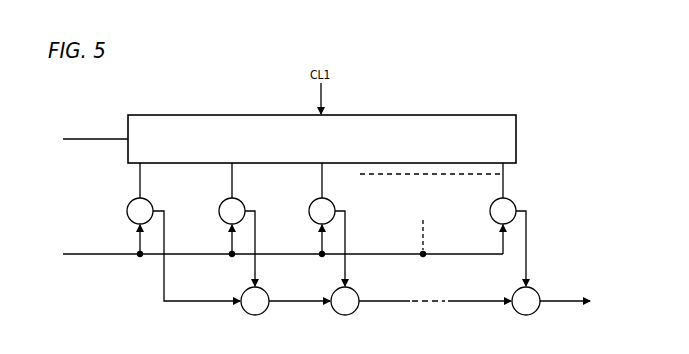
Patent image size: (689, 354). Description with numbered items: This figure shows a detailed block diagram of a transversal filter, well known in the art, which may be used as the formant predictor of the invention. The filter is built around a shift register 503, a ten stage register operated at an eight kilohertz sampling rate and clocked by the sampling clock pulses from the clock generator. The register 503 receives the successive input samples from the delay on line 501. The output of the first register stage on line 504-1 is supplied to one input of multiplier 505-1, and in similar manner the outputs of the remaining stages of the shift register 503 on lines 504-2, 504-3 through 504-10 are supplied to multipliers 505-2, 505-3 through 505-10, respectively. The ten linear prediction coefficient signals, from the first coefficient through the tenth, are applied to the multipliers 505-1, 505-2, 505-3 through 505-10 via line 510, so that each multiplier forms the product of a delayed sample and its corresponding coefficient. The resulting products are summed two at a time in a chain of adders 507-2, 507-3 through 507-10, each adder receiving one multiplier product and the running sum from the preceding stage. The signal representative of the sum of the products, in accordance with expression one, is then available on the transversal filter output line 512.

The line 501 is at (118, 139).
The shift register 503 is at (440, 115).
The line 504-1 is at (159, 180).
The line 504-2 is at (251, 180).
The line 504-3 is at (341, 180).
The line 504-10 is at (526, 180).
The multiplier 505-1 is at (179, 248).
The multiplier 505-2 is at (245, 241).
The multiplier 505-3 is at (335, 241).
The multiplier 505-10 is at (518, 241).
The adder 507-2 is at (283, 311).
The adder 507-3 is at (419, 311).
The adder 507-10 is at (527, 311).
The line 510 is at (125, 255).
The transversal filter output line 512 is at (543, 301).